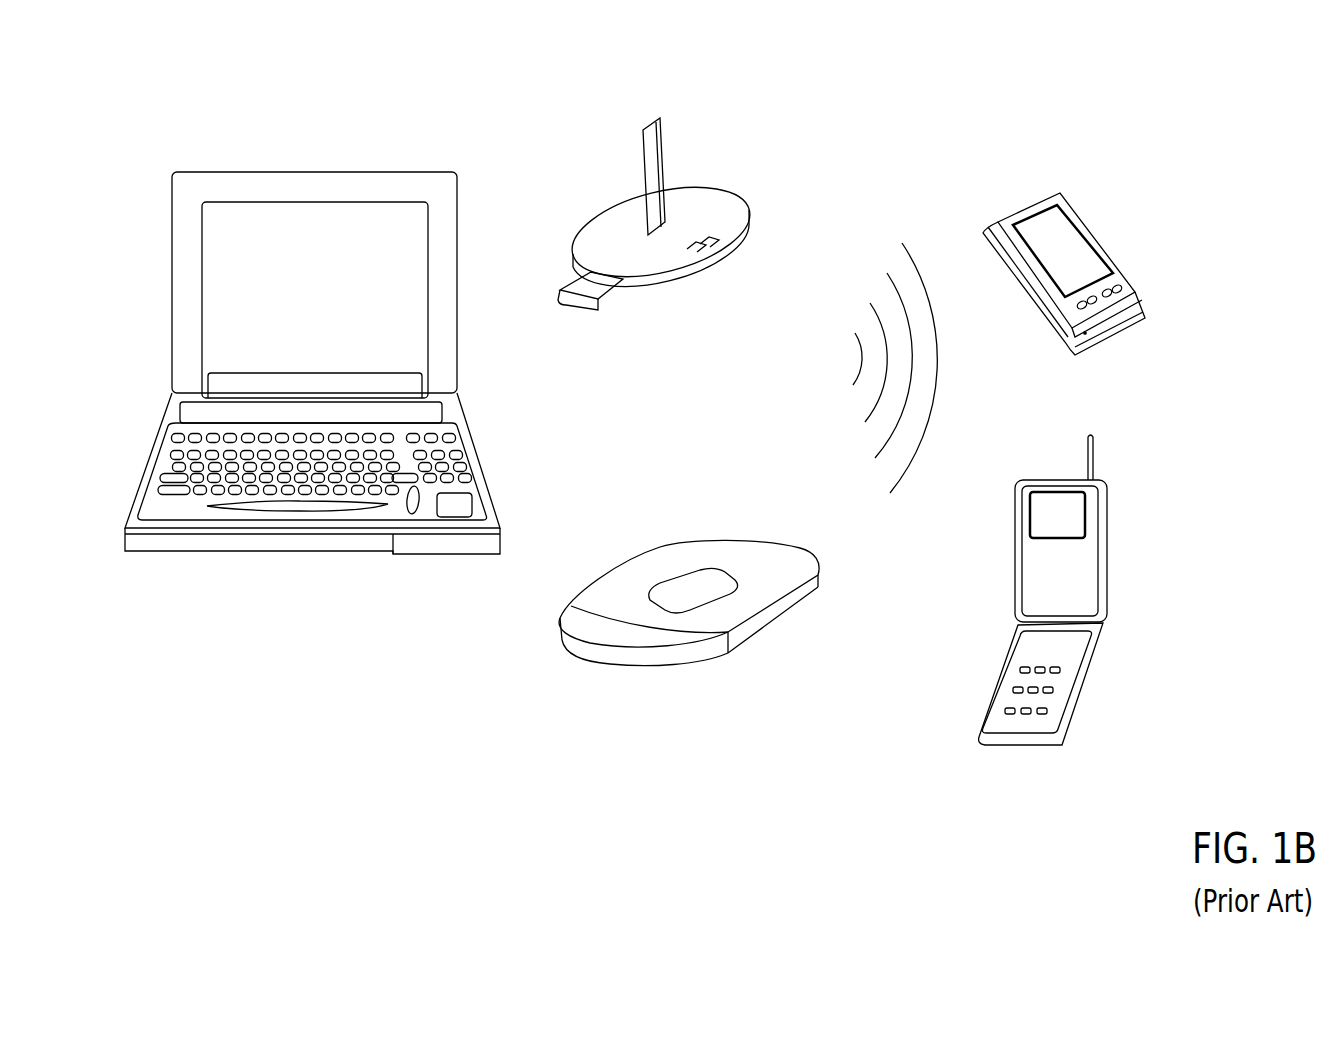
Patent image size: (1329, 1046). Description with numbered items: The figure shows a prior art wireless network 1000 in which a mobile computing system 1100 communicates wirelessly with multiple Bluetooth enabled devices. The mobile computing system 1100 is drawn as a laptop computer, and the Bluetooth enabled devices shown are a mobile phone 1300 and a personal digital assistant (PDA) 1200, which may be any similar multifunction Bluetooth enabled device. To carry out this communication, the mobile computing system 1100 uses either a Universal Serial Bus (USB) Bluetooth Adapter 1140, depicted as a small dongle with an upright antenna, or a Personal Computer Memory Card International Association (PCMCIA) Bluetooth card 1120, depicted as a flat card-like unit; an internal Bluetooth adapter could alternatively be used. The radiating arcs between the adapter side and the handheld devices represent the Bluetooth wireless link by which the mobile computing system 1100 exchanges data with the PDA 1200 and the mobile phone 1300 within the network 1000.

The wireless network 1000 is at (1197, 54).
The mobile computing system 1100 is at (300, 540).
The Universal Serial Bus (USB) Bluetooth Adapter 1140 is at (703, 170).
The PCMCIA Bluetooth card 1120 is at (725, 663).
The personal digital assistant (PDA) 1200 is at (1142, 327).
The mobile phone 1300 is at (1112, 577).